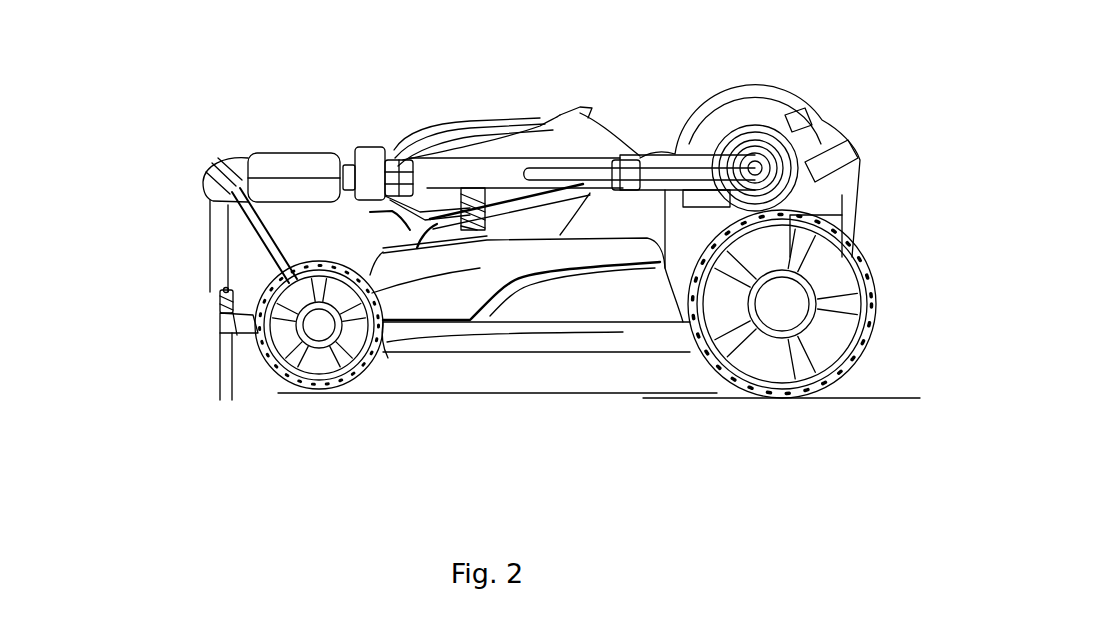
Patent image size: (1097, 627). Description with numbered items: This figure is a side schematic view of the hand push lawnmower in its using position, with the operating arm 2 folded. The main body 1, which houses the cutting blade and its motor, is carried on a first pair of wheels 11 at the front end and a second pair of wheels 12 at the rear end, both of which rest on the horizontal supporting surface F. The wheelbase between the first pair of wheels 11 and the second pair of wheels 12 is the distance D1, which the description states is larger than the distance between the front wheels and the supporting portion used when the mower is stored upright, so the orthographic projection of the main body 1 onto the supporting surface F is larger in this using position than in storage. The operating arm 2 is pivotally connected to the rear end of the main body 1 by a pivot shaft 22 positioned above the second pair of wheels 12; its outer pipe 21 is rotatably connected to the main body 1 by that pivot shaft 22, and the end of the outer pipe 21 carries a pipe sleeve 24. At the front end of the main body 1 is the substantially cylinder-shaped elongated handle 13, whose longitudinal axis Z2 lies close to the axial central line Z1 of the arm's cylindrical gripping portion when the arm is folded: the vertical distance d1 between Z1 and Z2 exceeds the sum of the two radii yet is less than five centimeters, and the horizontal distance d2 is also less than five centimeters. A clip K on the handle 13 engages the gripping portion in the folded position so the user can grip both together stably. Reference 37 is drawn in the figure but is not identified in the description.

The main body 1 is at (555, 130).
The operating arm 2 is at (223, 139).
The first pair of wheels 11 is at (328, 390).
The second pair of wheels 12 is at (800, 367).
The elongated handle 13 is at (237, 335).
The outer pipe 21 is at (570, 185).
The pivot shaft 22 is at (792, 140).
The pipe sleeve 24 is at (356, 147).
The lower handle portion 37 is at (295, 201).
The clip K is at (228, 287).
The axial central line Z1 is at (215, 303).
The axis Z2 is at (220, 317).
The distance in the vertical direction d1 is at (170, 298).
The distance in the horizontal direction d2 is at (220, 392).
The distance between the first pair of wheels and the second pair of wheels D1 is at (315, 392).
The supporting surface F is at (905, 398).